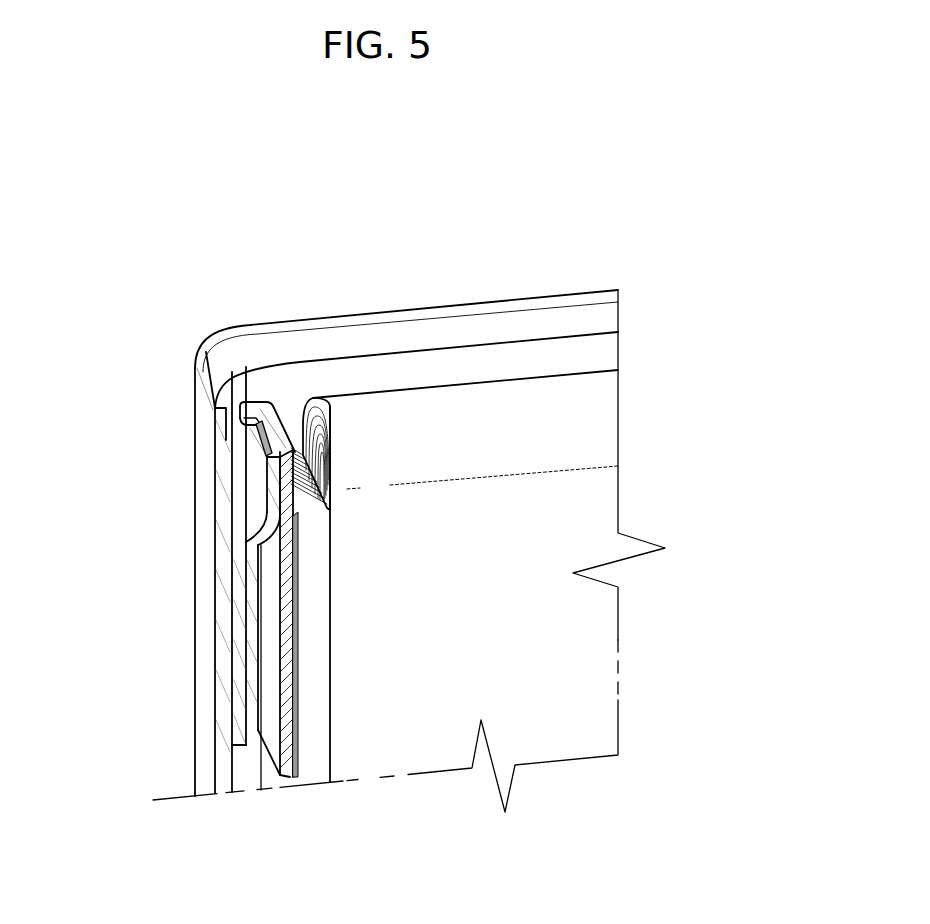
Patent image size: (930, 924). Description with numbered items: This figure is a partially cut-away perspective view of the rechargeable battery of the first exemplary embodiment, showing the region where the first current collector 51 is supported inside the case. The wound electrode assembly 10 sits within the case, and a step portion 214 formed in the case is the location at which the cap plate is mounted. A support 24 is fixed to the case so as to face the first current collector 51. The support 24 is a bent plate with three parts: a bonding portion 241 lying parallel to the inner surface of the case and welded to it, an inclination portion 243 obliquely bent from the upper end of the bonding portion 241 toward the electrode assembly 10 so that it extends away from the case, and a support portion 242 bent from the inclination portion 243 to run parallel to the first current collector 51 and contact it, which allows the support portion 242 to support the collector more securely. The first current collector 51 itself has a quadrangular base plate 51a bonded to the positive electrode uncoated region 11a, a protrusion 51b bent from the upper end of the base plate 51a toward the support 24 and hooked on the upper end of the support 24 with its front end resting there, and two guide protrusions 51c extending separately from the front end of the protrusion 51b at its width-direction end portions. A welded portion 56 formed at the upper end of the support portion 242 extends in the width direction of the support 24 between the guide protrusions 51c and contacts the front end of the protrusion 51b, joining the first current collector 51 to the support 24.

The electrode assembly 10 is at (473, 370).
The positive electrode uncoated region 11a is at (315, 705).
The support 24 is at (178, 556).
The bonding portion 241 is at (240, 582).
The support portion 242 is at (255, 465).
The inclination portion 243 is at (247, 520).
The step portion 214 is at (229, 440).
The welded portion 56 is at (231, 440).
The first current collector 51 is at (230, 513).
The base plate 51a is at (268, 626).
The protrusion 51b is at (269, 414).
The guide protrusion 51c is at (247, 410).